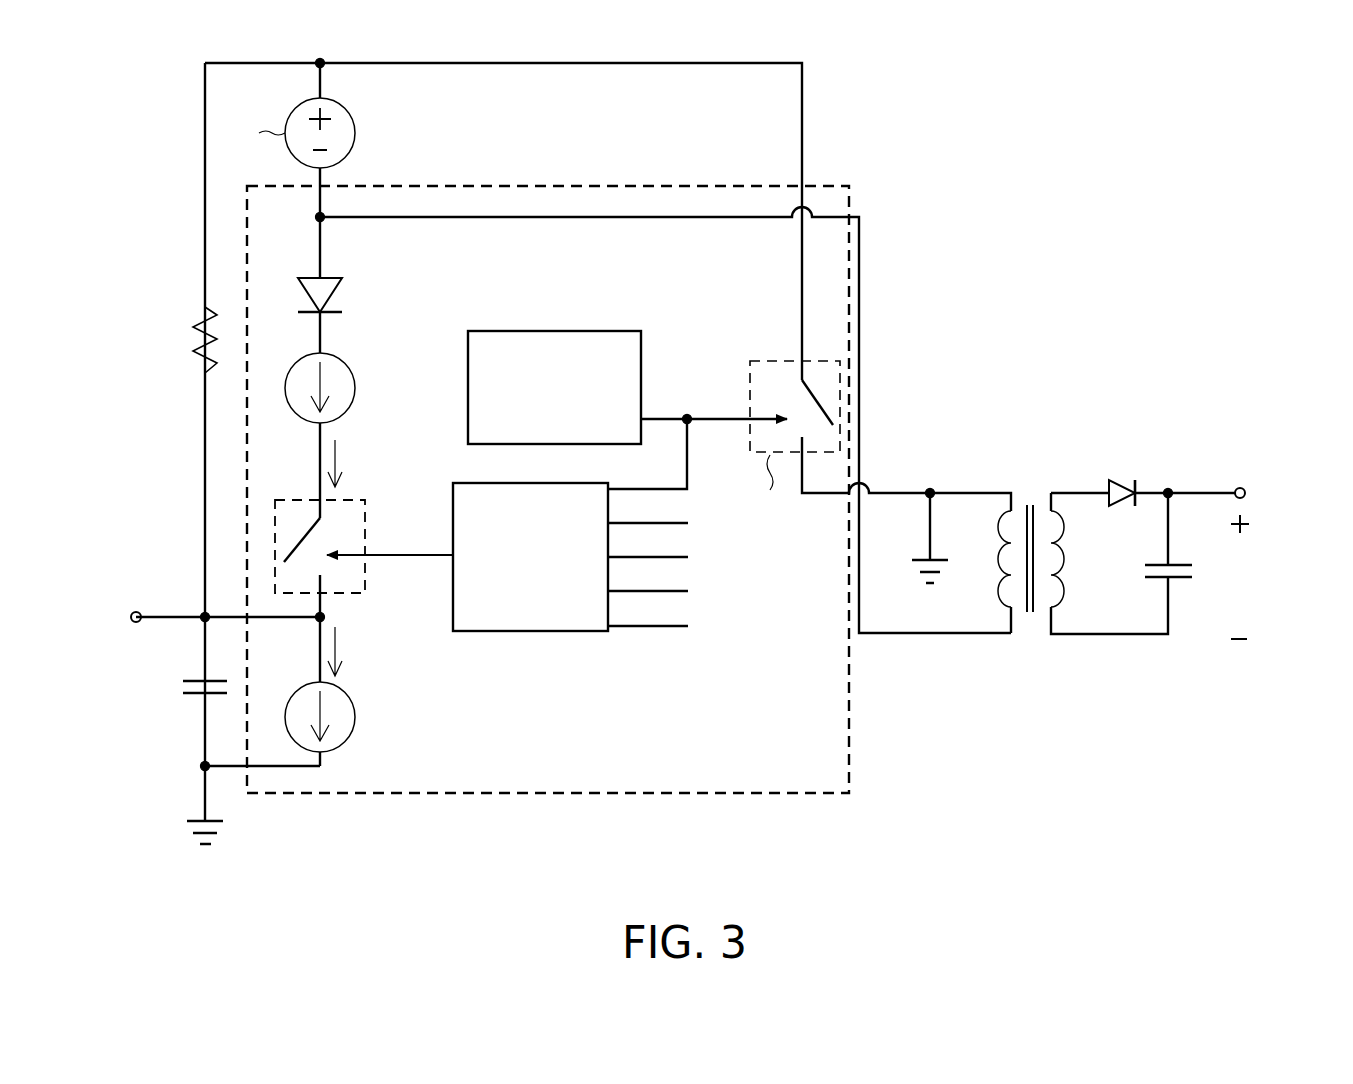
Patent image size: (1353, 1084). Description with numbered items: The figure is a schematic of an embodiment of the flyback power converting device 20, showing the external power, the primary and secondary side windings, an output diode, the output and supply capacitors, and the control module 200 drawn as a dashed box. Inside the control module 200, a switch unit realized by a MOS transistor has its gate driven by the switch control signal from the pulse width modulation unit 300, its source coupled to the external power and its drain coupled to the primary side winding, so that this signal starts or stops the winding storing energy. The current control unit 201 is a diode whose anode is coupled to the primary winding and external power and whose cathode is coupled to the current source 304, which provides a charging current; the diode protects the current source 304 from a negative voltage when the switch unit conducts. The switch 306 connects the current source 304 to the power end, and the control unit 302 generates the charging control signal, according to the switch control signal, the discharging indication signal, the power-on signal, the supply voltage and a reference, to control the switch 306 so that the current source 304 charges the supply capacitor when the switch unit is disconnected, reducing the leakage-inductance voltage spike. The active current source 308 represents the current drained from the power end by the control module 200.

The flyback power converting device 20 is at (1140, 135).
The control module 200 is at (852, 720).
The current control unit 201 is at (345, 300).
The pulse width modulation unit 300 is at (643, 345).
The control unit 302 is at (530, 631).
The current source 304 is at (355, 388).
The switch 306 is at (365, 505).
The active current source 308 is at (355, 717).